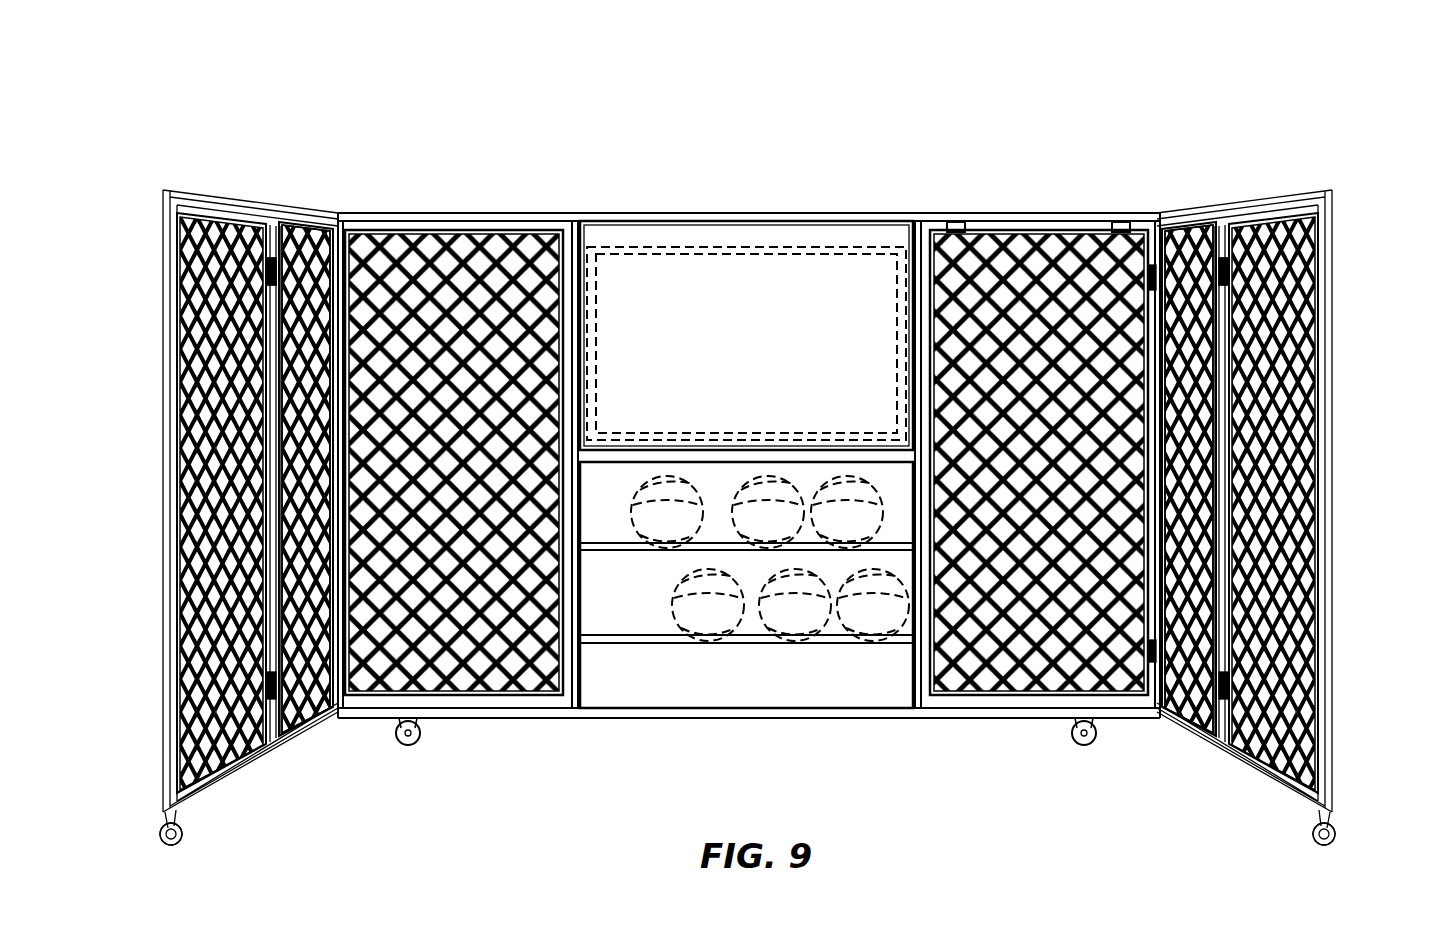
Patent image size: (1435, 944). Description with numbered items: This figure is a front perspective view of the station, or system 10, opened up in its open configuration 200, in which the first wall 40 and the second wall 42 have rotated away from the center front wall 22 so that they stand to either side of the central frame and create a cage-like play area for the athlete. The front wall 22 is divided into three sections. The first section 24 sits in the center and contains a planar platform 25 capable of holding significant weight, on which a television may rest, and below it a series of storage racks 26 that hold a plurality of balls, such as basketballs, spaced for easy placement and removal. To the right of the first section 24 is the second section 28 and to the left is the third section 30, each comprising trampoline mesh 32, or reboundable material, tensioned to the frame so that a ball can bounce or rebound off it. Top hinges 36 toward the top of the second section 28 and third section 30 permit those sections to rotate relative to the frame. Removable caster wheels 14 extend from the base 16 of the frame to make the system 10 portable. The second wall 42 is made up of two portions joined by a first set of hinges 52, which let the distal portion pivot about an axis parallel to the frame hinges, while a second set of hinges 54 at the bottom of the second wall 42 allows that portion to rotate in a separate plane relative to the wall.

The open configuration 200 is at (918, 72).
The system 10 is at (821, 441).
The wheels 14 is at (1084, 746).
The base 16 is at (915, 720).
The front wall 22 is at (713, 232).
The first section 24 is at (697, 733).
The platform 25 is at (591, 456).
The storage racks 26 is at (647, 643).
The second section 28 is at (1010, 733).
The third section 30 is at (462, 735).
The trampoline mesh 32 is at (305, 718).
The top hinges 36 is at (957, 225).
The first wall 40 is at (1350, 716).
The second wall 42 is at (150, 632).
The first set of hinges 52 is at (295, 228).
The second set of hinges 54 is at (190, 797).